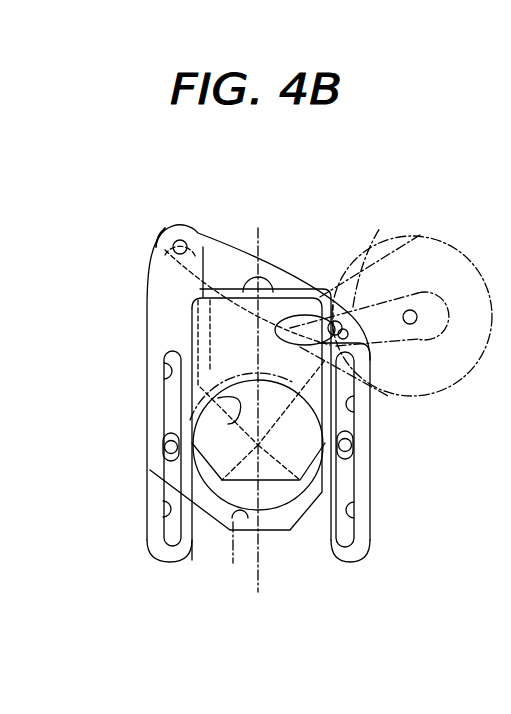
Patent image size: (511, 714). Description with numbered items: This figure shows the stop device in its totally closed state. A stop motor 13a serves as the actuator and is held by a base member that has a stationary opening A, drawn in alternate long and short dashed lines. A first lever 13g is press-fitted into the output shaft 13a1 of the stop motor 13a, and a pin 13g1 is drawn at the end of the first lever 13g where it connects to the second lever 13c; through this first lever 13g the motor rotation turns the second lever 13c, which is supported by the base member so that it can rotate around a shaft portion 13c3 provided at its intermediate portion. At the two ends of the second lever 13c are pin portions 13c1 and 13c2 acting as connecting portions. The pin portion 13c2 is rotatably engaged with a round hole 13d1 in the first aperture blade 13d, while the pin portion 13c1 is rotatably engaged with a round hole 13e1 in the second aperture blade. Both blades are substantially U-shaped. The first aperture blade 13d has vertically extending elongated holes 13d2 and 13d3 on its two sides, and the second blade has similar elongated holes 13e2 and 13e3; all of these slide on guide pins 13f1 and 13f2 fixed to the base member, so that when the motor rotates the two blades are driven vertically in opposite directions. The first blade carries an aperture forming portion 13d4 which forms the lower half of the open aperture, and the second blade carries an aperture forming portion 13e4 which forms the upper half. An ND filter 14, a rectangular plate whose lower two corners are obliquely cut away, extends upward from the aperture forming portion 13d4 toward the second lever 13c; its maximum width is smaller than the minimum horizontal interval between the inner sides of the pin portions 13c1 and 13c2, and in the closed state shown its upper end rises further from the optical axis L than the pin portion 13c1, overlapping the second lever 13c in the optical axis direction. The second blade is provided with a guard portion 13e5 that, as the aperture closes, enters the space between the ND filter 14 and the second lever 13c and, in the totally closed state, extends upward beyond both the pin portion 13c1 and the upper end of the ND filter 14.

The stop motor 13a is at (435, 240).
The output shaft 13a1 is at (417, 322).
The second lever 13c is at (230, 275).
The pin portion 13c1 is at (345, 300).
The pin portion 13c2 is at (180, 226).
The shaft portion 13c3 is at (256, 276).
The first aperture blade 13d is at (150, 297).
The round hole 13d1 is at (150, 243).
The elongated hole 13d2 is at (352, 412).
The elongated hole 13d3 is at (166, 363).
The aperture forming portion 13d4 is at (218, 398).
The round hole 13e1 is at (305, 300).
The elongated hole 13e2 is at (352, 511).
The elongated hole 13e3 is at (166, 510).
The aperture forming portion 13e4 is at (218, 487).
The guard portion 13e5 is at (283, 296).
The guide pin 13f1 is at (352, 445).
The guide pin 13f2 is at (171, 447).
The first lever 13g is at (377, 338).
The crank pin 13g1 is at (372, 310).
The ND filter 14 is at (275, 472).
The stationary opening A is at (235, 555).
The optical axis L is at (301, 482).